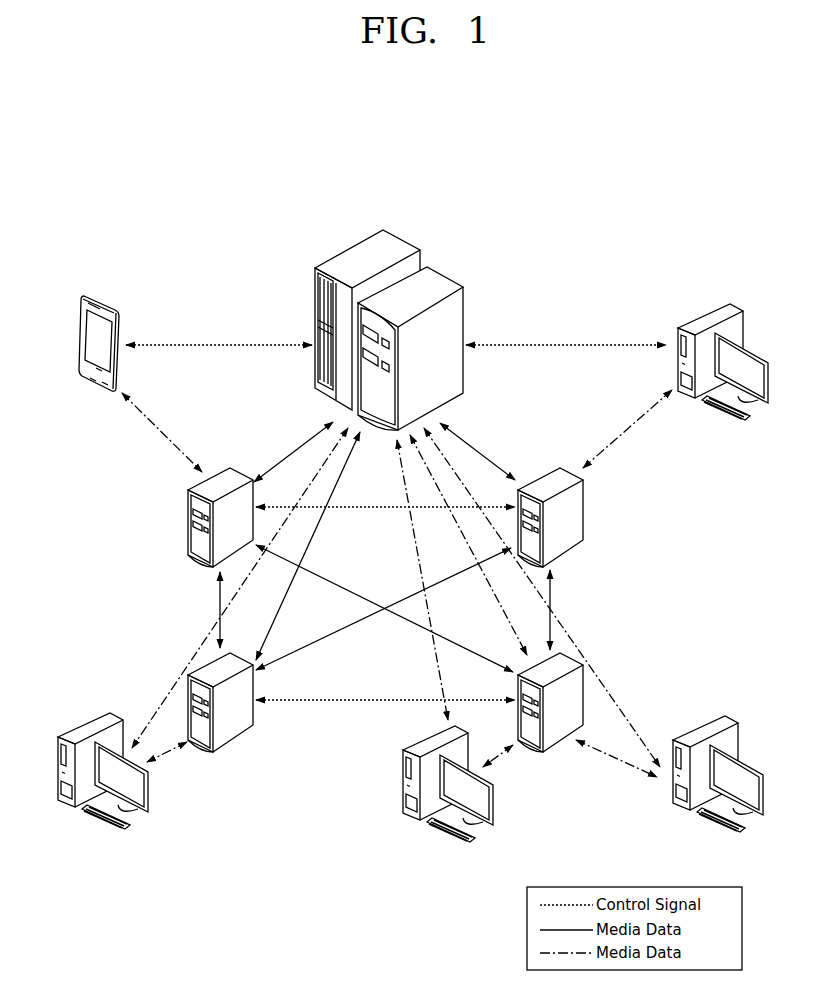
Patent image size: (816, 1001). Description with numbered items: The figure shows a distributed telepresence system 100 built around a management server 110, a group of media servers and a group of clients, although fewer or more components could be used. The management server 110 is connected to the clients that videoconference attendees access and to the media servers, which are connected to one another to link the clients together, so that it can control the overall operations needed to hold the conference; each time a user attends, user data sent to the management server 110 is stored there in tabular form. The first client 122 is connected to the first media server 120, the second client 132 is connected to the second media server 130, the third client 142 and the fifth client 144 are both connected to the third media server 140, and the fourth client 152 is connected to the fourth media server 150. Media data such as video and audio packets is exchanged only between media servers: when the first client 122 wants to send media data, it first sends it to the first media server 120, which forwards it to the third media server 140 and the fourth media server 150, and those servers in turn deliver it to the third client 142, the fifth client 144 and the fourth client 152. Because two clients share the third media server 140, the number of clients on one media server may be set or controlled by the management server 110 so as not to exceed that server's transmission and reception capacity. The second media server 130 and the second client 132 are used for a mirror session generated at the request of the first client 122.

The distributed telepresence system 100 is at (644, 157).
The management server 110 is at (457, 270).
The media server 1 120 is at (235, 467).
The client 1 122 is at (104, 298).
The media server 2 130 is at (235, 652).
The client 2 132 is at (120, 707).
The media server 3 140 is at (568, 653).
The client 3 142 is at (738, 717).
The client 5 144 is at (398, 770).
The media server 4 150 is at (568, 466).
The client 4 152 is at (738, 298).